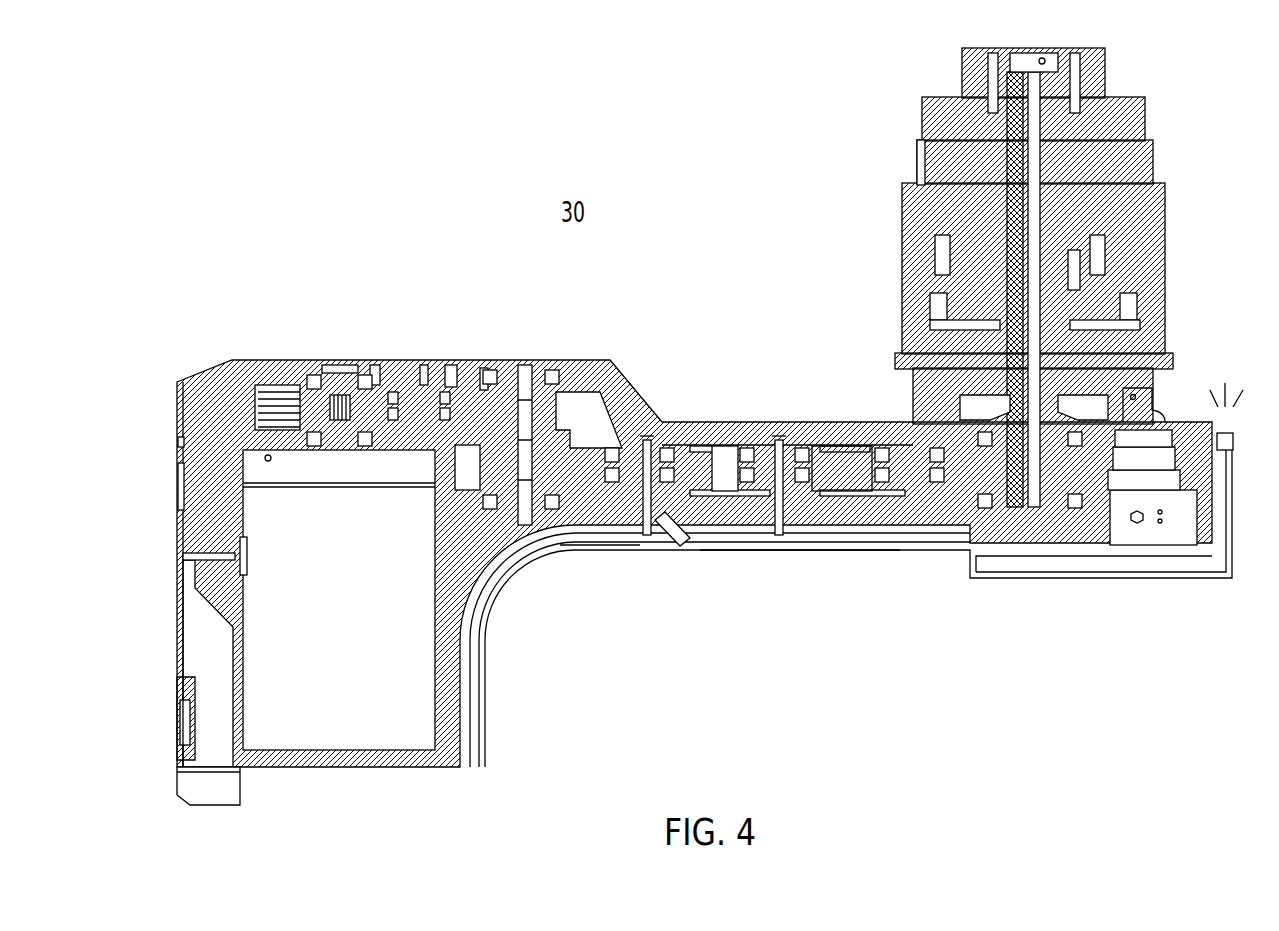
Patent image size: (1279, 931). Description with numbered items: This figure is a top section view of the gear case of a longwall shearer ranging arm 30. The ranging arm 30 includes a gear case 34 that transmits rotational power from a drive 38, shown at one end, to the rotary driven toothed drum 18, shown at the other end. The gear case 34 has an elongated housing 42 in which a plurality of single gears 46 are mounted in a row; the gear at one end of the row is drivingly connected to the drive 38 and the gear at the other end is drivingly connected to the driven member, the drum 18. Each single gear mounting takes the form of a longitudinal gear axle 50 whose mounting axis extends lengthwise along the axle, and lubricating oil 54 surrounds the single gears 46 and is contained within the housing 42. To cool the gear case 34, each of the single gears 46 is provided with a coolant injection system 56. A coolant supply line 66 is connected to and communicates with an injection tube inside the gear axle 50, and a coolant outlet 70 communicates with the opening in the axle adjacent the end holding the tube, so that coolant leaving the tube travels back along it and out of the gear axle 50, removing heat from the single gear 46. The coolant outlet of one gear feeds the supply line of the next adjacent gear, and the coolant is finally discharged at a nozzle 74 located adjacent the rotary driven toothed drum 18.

The rotary driven toothed drum 18 is at (919, 168).
The longwall shearer ranging arm 30 is at (704, 582).
The gear case 34 is at (712, 416).
The drive 38 is at (352, 385).
The elongated housing 42 is at (776, 438).
The single gears 46 is at (838, 460).
The gear axle 50 is at (655, 432).
The lubricating oil 54 is at (730, 442).
The coolant injection system 56 is at (800, 589).
The coolant supply line 66 is at (615, 548).
The coolant outlet 70 is at (670, 545).
The nozzle 74 is at (1233, 435).